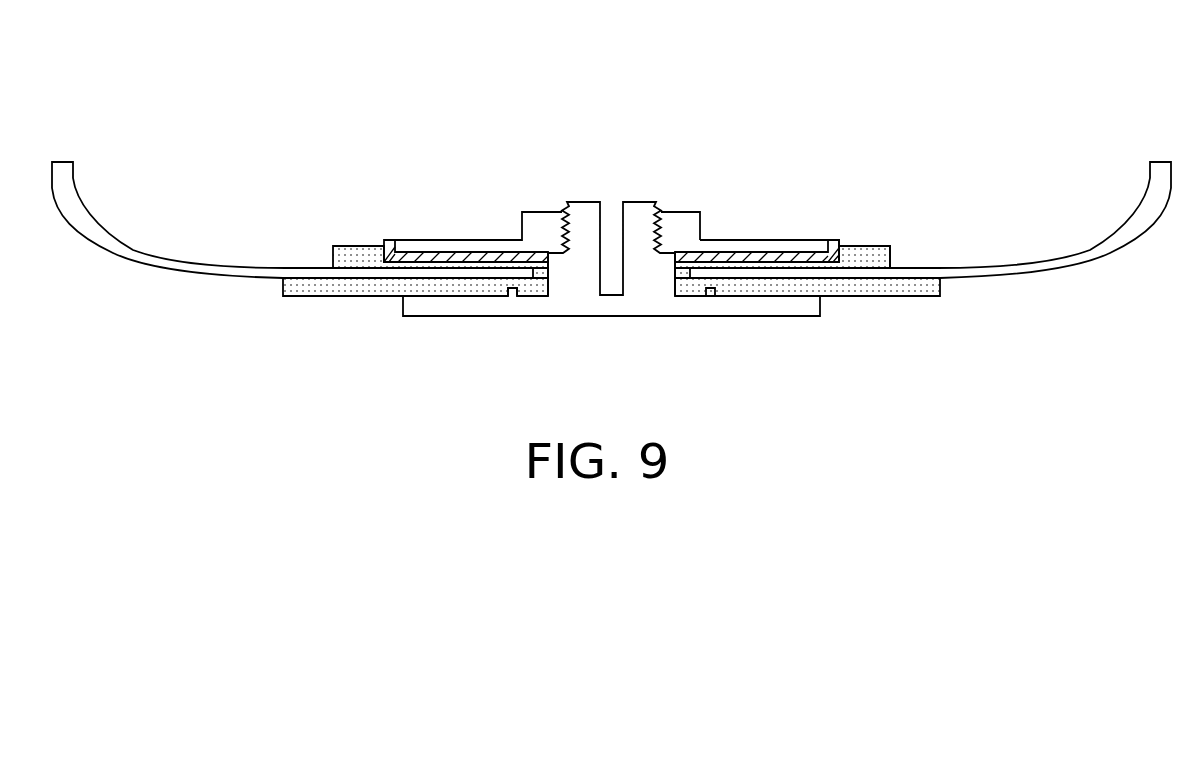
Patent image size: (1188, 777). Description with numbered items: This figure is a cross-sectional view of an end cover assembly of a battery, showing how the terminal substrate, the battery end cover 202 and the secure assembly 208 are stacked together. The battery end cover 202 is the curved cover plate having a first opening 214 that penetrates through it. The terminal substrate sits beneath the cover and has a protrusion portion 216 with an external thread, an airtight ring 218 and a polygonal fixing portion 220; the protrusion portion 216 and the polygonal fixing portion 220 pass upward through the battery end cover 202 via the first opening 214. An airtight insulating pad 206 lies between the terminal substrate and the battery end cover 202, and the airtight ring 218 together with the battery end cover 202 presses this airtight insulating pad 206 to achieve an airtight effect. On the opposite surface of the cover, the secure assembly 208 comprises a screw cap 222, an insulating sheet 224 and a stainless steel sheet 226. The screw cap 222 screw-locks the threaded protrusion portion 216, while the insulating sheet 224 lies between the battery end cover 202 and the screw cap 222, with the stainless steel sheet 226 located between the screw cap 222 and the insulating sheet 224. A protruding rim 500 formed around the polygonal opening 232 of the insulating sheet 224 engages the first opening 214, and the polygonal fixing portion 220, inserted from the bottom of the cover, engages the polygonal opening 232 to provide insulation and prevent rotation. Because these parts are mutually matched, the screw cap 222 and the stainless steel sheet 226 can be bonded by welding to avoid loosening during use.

The battery end cover 202 is at (62, 162).
The airtight insulating pad 206 is at (939, 282).
The secure assembly 208 is at (788, 115).
The first opening 214 is at (517, 290).
The protrusion portion 216 is at (583, 218).
The airtight ring 218 is at (710, 293).
The polygonal fixing portion 220 is at (667, 262).
The screw cap 222 is at (528, 228).
The insulating sheet 224 is at (893, 258).
The stainless steel sheet 226 is at (760, 257).
The polygonal opening 232 is at (548, 266).
The protruding rim 500 is at (531, 275).